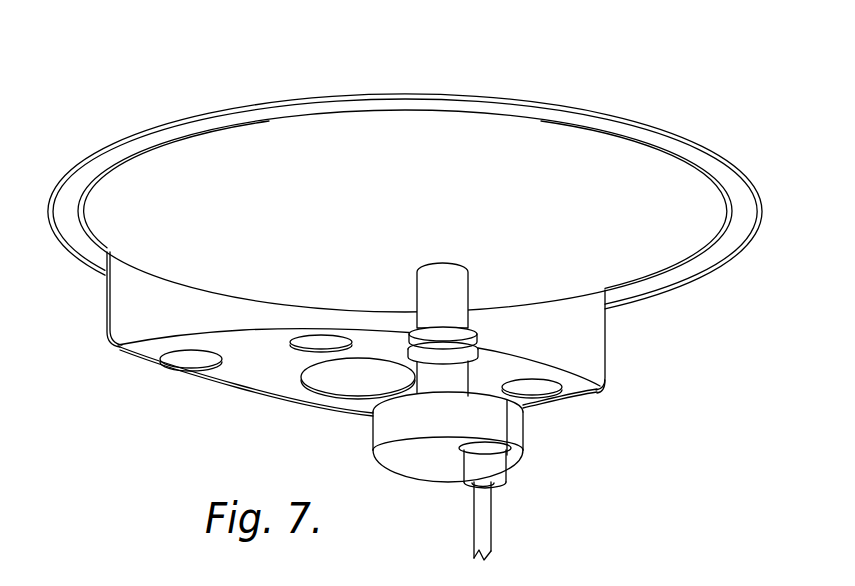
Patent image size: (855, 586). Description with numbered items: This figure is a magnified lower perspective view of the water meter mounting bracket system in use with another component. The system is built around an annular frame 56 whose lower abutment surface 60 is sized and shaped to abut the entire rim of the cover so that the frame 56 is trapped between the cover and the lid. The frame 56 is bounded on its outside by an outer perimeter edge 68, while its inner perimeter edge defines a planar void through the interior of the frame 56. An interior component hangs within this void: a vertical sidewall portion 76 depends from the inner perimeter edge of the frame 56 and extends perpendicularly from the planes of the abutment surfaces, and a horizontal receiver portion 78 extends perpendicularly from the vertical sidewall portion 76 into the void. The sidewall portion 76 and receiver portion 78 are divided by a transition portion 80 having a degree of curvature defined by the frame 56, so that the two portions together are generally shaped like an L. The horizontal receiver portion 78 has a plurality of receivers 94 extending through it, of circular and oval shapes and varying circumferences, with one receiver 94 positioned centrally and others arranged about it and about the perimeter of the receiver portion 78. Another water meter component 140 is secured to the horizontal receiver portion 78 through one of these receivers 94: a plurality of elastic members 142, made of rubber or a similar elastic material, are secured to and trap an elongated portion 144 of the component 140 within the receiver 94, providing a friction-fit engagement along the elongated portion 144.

The annular frame 56 is at (521, 97).
The lower abutment surface 60 is at (758, 200).
The outer perimeter edge 68 is at (688, 140).
The vertical sidewall portion 76 is at (130, 307).
The horizontal receiver portion 78 is at (597, 148).
The transition portion 80 is at (140, 366).
The receivers 94 is at (373, 368).
The another water meter component 140 is at (522, 468).
The elastic members 142 is at (460, 352).
The elongated portion 144 is at (427, 382).